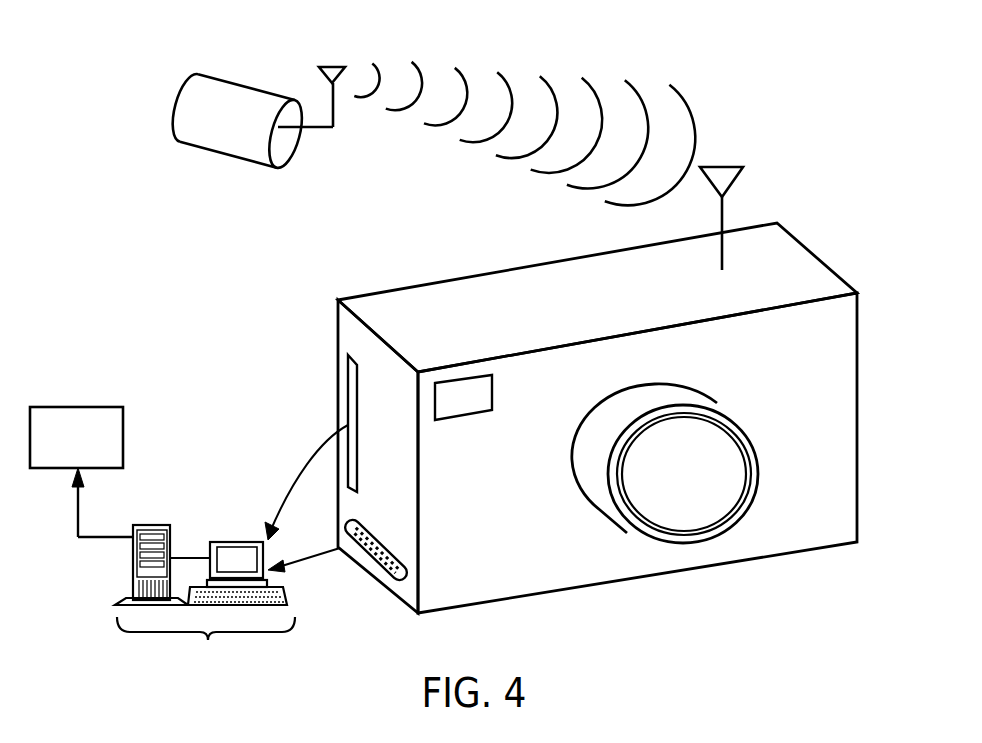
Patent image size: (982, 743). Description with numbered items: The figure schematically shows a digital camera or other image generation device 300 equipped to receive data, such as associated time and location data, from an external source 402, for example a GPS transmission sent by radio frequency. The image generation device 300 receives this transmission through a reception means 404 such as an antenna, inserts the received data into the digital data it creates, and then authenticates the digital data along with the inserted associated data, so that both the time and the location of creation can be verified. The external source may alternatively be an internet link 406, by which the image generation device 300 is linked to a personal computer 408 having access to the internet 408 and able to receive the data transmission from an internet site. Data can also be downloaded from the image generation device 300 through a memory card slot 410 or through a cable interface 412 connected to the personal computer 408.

The image generation device 300 is at (857, 402).
The external source 402 is at (248, 88).
The reception means 404 is at (723, 210).
The internet link 406 is at (78, 530).
The personal computer 408 is at (88, 405).
The memory card slot 410 is at (348, 385).
The cable interface 412 is at (375, 562).